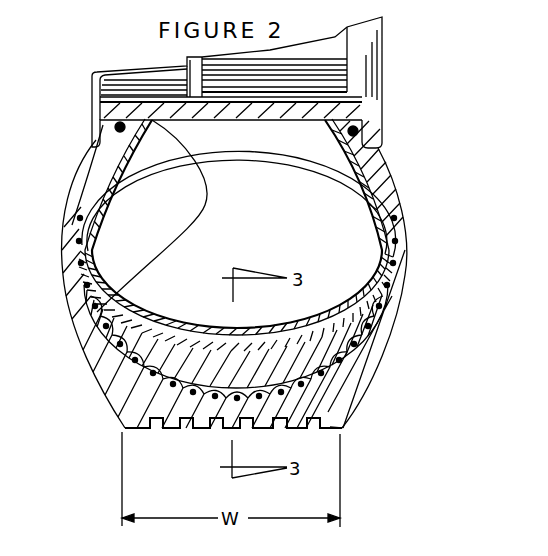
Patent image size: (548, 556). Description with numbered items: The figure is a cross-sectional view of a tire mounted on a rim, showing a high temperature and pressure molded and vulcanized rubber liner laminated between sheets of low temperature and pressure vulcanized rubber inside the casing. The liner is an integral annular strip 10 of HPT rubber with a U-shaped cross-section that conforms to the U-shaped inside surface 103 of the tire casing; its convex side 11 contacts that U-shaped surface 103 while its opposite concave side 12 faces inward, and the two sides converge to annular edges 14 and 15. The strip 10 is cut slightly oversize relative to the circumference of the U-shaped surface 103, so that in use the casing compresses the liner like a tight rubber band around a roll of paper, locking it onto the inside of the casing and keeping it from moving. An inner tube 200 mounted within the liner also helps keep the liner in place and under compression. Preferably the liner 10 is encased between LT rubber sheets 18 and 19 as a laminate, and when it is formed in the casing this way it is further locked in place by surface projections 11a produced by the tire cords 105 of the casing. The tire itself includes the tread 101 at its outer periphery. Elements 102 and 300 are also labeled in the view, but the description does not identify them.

The annular strip 10 is at (332, 338).
The convex side 11 is at (162, 215).
The surface projections 11a is at (108, 366).
The concave side 12 is at (152, 305).
The annular edge 14 is at (95, 217).
The annular edge 15 is at (382, 244).
The LT rubber sheet 18 is at (323, 367).
The LT rubber sheet 19 is at (343, 290).
The tread 101 is at (140, 430).
The sidewall rubber 102 is at (382, 331).
The U-shaped surface 103 is at (362, 162).
The tire cords 105 is at (340, 432).
The inner tube 200 is at (318, 128).
The hub 300 is at (148, 77).